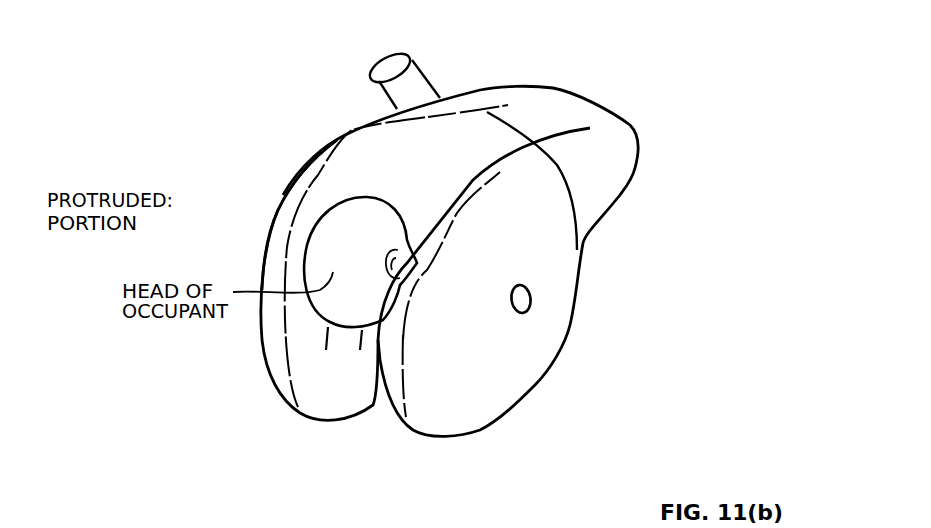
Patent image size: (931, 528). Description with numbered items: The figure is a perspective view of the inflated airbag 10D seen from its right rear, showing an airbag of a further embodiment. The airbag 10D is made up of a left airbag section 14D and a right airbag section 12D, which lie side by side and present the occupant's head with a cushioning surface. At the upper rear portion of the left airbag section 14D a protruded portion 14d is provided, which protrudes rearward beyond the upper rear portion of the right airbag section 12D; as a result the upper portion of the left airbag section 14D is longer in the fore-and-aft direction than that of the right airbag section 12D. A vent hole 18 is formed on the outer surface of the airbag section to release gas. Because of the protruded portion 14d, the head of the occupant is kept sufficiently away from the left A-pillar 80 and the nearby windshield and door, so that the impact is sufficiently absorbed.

The left A-pillar 80 is at (436, 72).
The protruded portion 14d is at (282, 202).
The airbag 10D is at (625, 274).
The vent hole 18 is at (530, 313).
The left airbag section 14D is at (315, 407).
The right airbag section 12D is at (487, 405).